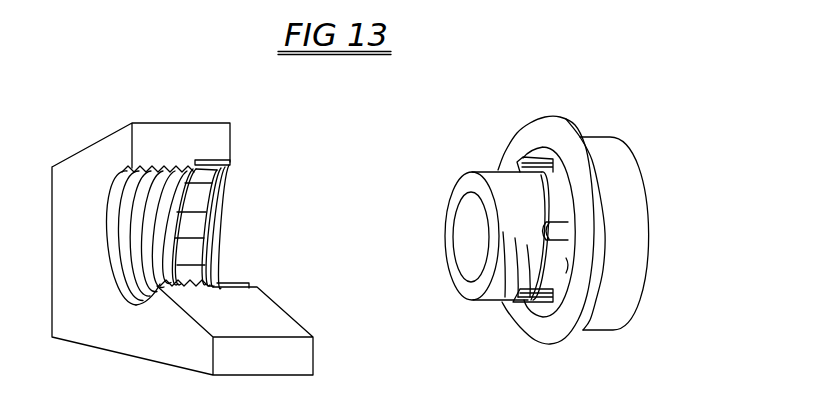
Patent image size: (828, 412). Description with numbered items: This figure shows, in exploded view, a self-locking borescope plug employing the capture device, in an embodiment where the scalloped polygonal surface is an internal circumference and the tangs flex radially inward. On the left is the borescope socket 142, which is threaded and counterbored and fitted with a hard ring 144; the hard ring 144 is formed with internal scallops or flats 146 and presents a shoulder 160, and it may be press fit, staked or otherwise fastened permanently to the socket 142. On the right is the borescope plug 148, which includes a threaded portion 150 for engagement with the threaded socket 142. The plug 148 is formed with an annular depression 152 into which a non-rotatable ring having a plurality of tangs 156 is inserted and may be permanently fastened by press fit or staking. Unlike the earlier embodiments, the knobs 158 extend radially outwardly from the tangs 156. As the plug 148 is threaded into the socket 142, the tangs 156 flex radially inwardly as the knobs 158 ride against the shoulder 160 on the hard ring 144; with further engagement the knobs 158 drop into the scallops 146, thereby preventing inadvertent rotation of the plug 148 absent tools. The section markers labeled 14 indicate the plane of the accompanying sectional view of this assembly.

The section line of FIG. 14 is at (440, 235).
The externally threaded portion 142 is at (142, 186).
The locking plate 144 is at (205, 161).
The collar 146 is at (193, 218).
The flange housing 148 is at (573, 133).
The cylindrical hub 150 is at (495, 180).
The key 152 is at (566, 272).
The upper locking tab 156 is at (550, 302).
The lower locking tab 158 is at (512, 304).
The retaining lugs 160 is at (229, 169).